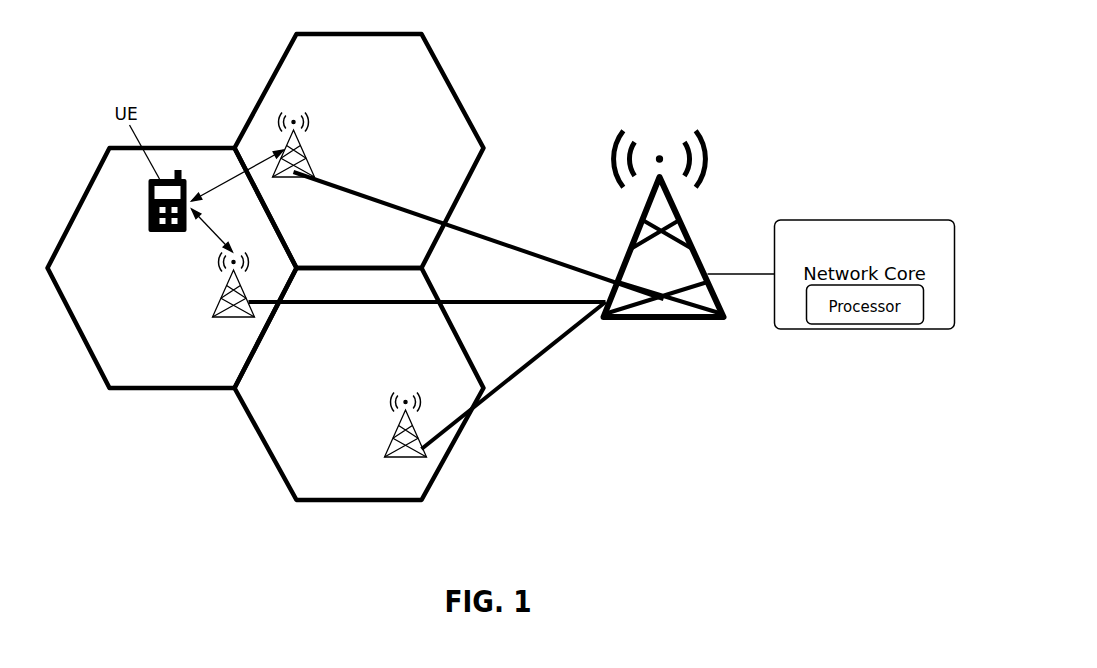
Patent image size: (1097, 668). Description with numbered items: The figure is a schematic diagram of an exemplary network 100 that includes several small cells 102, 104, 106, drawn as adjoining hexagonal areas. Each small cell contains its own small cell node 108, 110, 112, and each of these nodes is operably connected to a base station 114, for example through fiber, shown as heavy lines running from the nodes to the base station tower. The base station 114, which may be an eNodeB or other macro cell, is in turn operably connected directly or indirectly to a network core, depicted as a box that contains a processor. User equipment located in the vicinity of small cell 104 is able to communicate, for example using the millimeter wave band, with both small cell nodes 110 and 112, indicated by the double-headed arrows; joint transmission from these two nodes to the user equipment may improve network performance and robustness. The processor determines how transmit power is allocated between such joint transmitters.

The network 100 is at (748, 90).
The small cell 102 is at (375, 388).
The small cell 104 is at (187, 275).
The small cell 106 is at (375, 155).
The small cell node 108 is at (420, 447).
The small cell node 110 is at (232, 308).
The small cell node 112 is at (285, 128).
The base station 114 is at (625, 308).